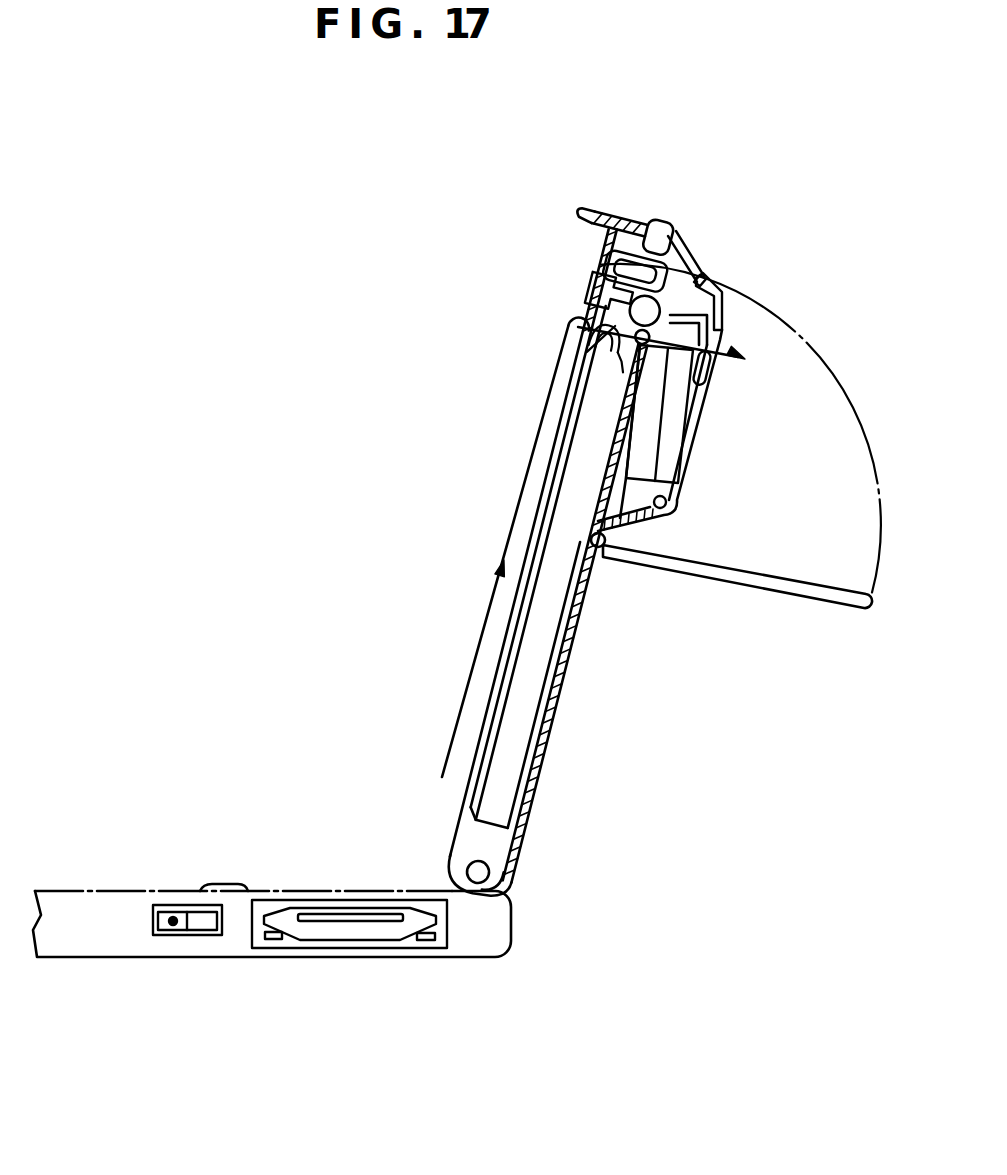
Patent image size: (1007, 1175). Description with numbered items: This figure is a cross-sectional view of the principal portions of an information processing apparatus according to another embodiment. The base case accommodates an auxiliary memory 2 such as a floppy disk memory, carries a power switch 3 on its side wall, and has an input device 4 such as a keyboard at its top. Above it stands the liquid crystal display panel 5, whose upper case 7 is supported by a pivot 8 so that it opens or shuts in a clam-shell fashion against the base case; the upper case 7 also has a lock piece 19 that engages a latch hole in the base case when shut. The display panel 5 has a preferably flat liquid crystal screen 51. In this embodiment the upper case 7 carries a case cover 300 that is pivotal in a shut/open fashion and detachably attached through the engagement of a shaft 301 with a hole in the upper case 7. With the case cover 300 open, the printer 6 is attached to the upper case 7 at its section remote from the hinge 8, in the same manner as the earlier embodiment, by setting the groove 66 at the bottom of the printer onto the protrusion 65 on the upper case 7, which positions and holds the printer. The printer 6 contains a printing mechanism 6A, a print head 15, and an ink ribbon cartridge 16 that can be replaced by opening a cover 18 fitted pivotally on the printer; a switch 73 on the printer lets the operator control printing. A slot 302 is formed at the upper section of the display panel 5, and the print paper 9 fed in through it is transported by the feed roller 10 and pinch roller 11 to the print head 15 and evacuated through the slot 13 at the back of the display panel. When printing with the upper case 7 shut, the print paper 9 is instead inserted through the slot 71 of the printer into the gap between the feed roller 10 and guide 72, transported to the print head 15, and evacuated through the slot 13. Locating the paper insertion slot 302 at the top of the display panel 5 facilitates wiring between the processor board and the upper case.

The auxiliary memory 2 is at (348, 933).
The power switch 3 is at (202, 930).
The input device 4 is at (225, 882).
The liquid crystal display panel 5 is at (520, 733).
The liquid crystal screen 51 is at (555, 483).
The printer 6 is at (709, 393).
The printing mechanism 6A is at (690, 290).
The upper case 7 is at (567, 670).
The pivot 8 is at (510, 875).
The print paper 9 is at (475, 667).
The feed roller 10 is at (673, 292).
The pinch roller 11 is at (620, 363).
The slot 13 is at (727, 347).
The print head 15 is at (683, 380).
The ink ribbon cartridge 16 is at (677, 493).
The cover 18 is at (688, 453).
The lock piece 19 is at (577, 218).
The protrusion 65 is at (610, 253).
The groove 66 is at (617, 227).
The slot 71 is at (690, 260).
The guide 72 is at (600, 290).
The switch 73 is at (710, 272).
The case cover 300 is at (763, 590).
The shaft 301 is at (600, 547).
The slot 302 is at (587, 320).